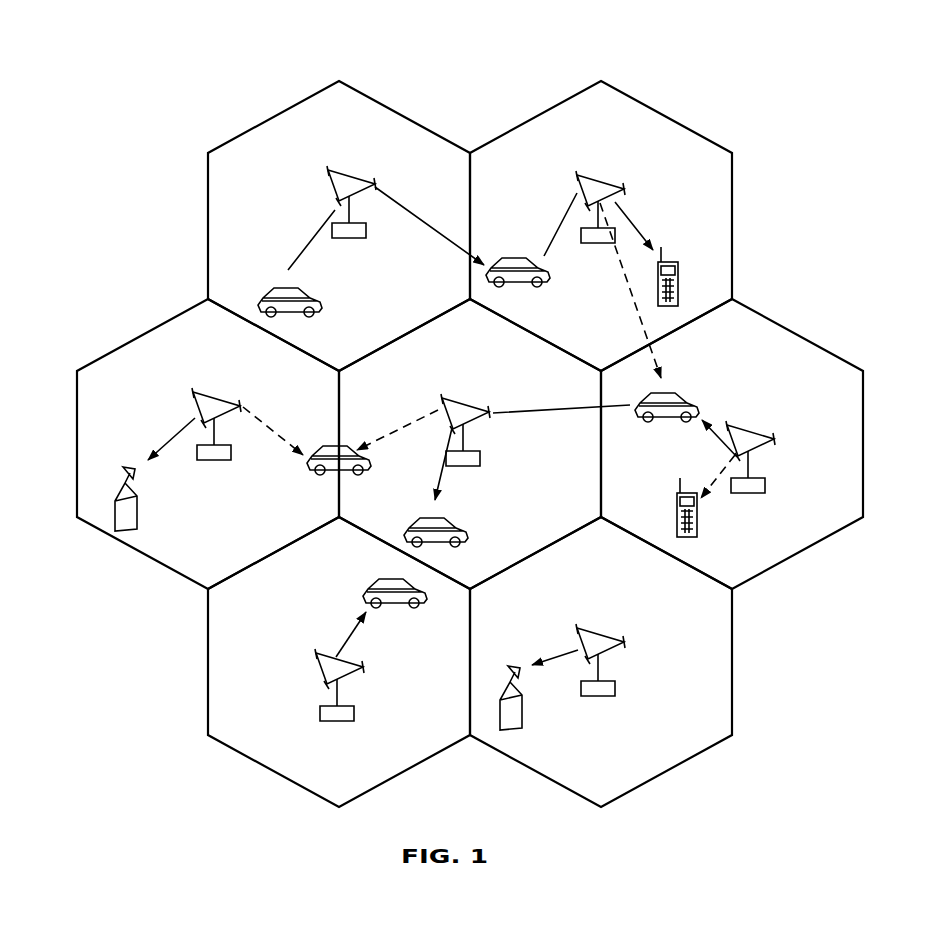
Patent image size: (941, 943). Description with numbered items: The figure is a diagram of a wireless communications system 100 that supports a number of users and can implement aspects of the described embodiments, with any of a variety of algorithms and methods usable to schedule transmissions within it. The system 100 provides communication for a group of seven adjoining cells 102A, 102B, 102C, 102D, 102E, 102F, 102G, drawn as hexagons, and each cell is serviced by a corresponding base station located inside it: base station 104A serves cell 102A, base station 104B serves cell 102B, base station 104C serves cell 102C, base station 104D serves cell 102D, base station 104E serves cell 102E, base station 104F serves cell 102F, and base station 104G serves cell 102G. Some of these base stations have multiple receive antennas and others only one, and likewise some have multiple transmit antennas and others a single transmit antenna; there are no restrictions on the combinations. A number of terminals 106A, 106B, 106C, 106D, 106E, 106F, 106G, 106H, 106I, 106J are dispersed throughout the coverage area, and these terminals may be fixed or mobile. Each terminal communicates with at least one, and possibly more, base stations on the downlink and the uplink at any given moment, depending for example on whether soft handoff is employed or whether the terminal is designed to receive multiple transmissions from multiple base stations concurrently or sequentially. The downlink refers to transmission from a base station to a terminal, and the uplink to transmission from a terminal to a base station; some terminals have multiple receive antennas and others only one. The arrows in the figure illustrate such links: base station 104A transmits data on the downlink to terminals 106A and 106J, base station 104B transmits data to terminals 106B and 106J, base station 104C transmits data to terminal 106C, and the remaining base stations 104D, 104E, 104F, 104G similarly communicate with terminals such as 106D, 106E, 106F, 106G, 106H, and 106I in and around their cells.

The communications system 100 is at (786, 69).
The cell 102A is at (283, 112).
The cell 102B is at (656, 112).
The cell 102C is at (137, 341).
The cell 102D is at (506, 343).
The cell 102E is at (864, 443).
The cell 102F is at (207, 671).
The cell 102G is at (734, 648).
The base station 104A is at (339, 178).
The base station 104B is at (587, 178).
The base station 104C is at (203, 396).
The base station 104D is at (454, 404).
The base station 104E is at (737, 430).
The base station 104F is at (316, 657).
The base station 104G is at (586, 636).
The terminal 106A is at (287, 290).
The terminal 106B is at (663, 262).
The terminal 106C is at (131, 474).
The terminal 106D is at (434, 519).
The terminal 106E is at (670, 394).
The terminal 106F is at (392, 581).
The terminal 106G is at (512, 668).
The terminal 106H is at (326, 449).
The terminal 106I is at (678, 494).
The terminal 106J is at (524, 249).